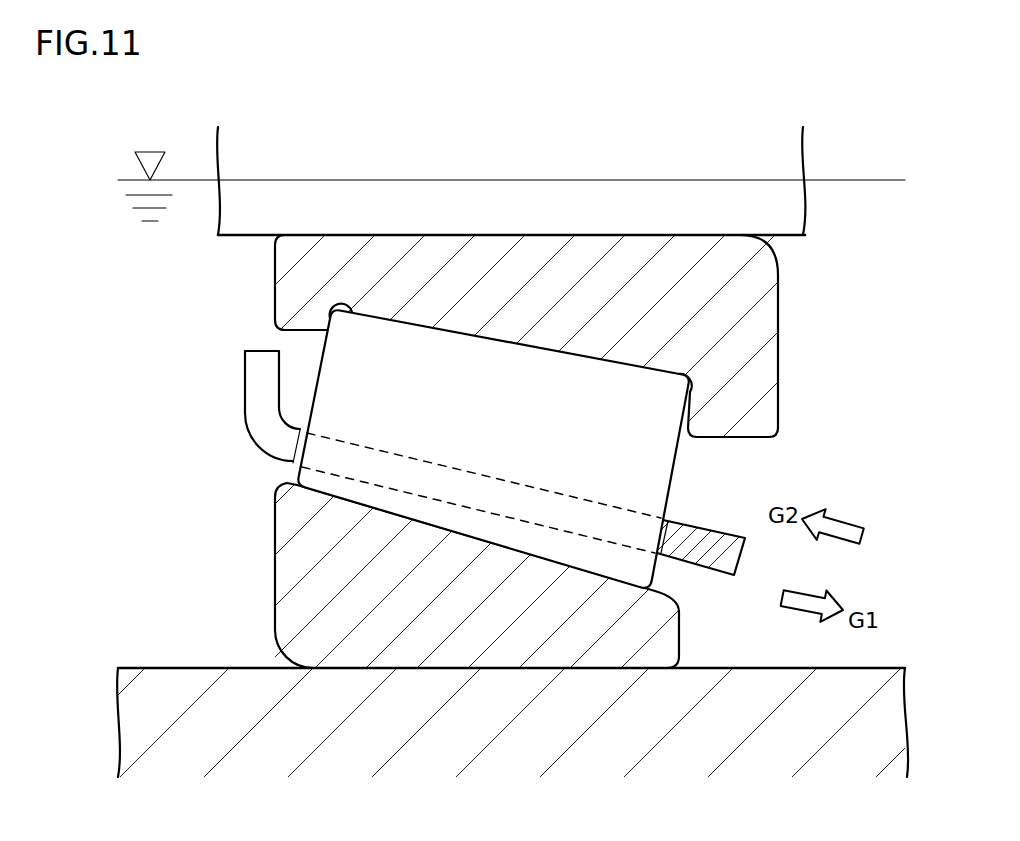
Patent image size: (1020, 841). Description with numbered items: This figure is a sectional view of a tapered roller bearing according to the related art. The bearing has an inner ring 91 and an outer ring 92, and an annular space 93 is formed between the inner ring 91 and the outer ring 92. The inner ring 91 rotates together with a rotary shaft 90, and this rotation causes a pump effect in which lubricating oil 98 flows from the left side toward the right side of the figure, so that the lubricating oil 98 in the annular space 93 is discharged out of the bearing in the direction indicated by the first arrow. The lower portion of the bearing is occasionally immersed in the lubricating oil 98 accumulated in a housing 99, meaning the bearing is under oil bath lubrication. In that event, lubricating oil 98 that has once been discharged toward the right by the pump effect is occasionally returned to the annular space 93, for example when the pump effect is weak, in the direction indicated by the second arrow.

The rotary shaft 90 is at (238, 235).
The inner ring 91 is at (778, 322).
The outer ring 92 is at (275, 565).
The annular space 93 is at (263, 481).
The lubricating oil 98 is at (165, 483).
The housing 99 is at (168, 668).